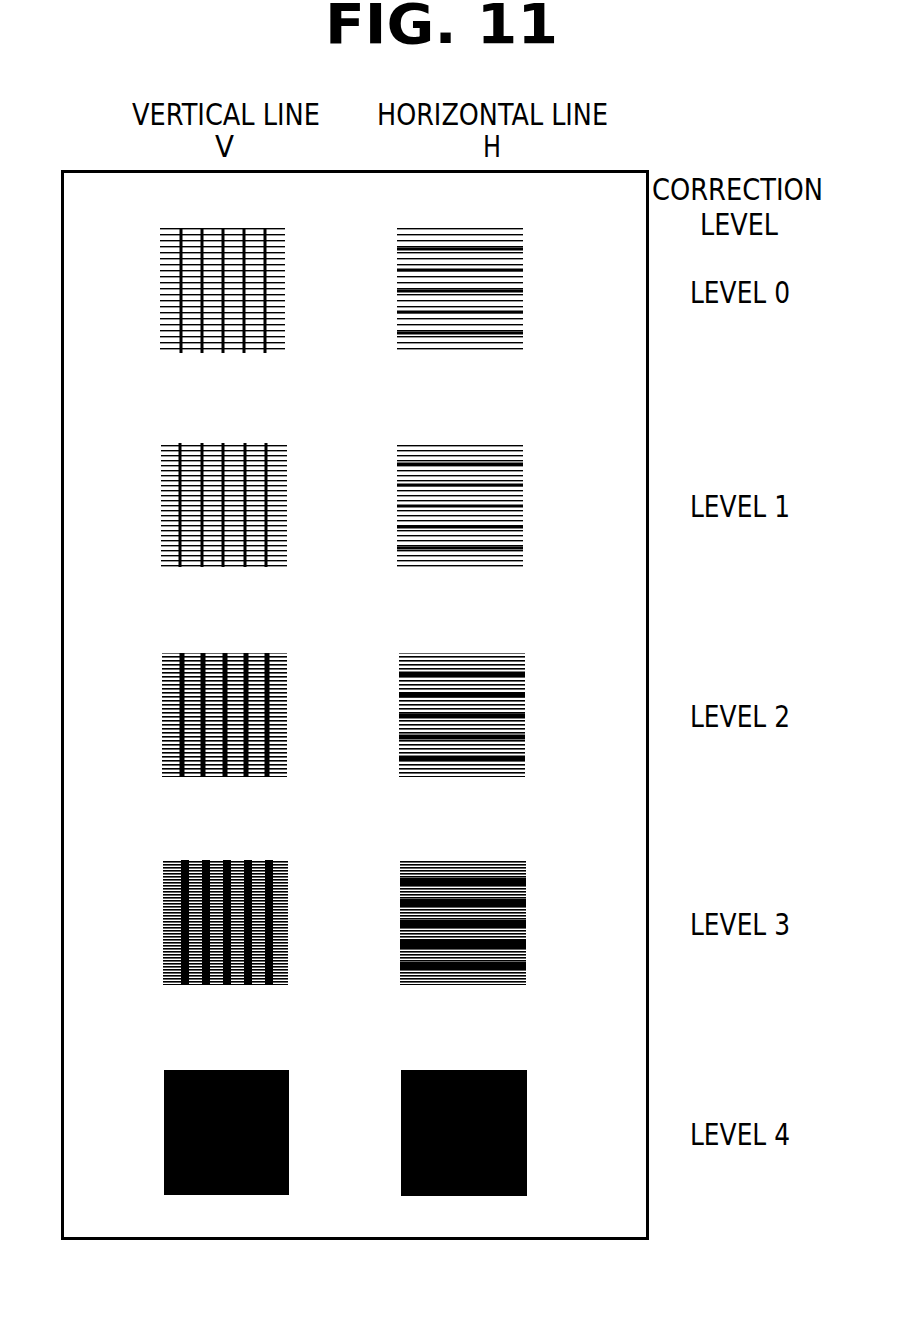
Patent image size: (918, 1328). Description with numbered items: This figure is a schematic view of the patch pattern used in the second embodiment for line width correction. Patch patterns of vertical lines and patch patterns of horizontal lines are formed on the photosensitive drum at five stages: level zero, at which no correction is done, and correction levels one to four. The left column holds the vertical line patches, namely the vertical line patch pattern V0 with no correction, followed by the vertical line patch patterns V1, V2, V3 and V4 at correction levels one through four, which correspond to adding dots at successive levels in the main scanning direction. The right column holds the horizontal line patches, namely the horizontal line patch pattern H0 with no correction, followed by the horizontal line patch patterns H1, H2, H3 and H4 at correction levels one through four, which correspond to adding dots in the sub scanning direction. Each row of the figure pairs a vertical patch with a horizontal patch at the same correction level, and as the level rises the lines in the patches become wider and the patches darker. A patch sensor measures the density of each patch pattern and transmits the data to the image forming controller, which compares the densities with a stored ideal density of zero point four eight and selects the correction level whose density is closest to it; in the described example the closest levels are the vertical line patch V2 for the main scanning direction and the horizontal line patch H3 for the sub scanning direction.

The vertical line patch pattern at level 0 V0 is at (194, 290).
The vertical line patch pattern at correction level 1 V1 is at (195, 505).
The vertical line patch pattern at correction level 2 V2 is at (195, 715).
The vertical line patch pattern at correction level 3 V3 is at (195, 922).
The vertical line patch pattern at correction level 4 V4 is at (196, 1132).
The horizontal line patch pattern at level 0 H0 is at (489, 290).
The horizontal line patch pattern at correction level 1 H1 is at (489, 505).
The horizontal line patch pattern at correction level 2 H2 is at (490, 715).
The horizontal line patch pattern at correction level 3 H3 is at (490, 922).
The horizontal line patch pattern at correction level 4 H4 is at (491, 1133).